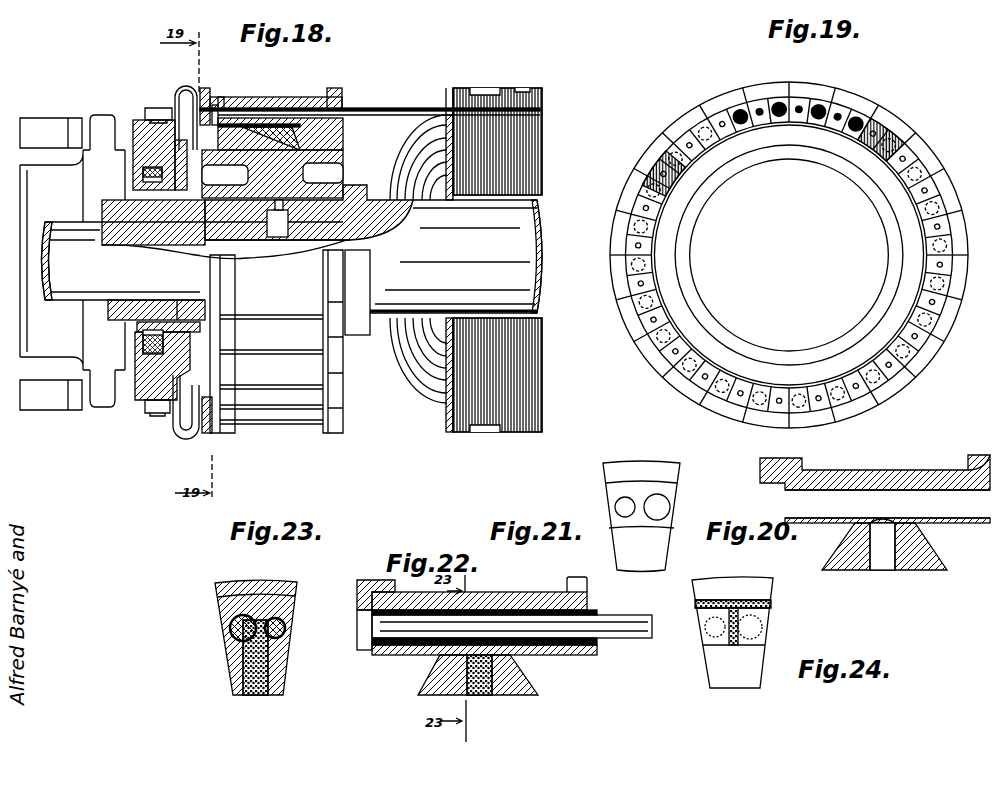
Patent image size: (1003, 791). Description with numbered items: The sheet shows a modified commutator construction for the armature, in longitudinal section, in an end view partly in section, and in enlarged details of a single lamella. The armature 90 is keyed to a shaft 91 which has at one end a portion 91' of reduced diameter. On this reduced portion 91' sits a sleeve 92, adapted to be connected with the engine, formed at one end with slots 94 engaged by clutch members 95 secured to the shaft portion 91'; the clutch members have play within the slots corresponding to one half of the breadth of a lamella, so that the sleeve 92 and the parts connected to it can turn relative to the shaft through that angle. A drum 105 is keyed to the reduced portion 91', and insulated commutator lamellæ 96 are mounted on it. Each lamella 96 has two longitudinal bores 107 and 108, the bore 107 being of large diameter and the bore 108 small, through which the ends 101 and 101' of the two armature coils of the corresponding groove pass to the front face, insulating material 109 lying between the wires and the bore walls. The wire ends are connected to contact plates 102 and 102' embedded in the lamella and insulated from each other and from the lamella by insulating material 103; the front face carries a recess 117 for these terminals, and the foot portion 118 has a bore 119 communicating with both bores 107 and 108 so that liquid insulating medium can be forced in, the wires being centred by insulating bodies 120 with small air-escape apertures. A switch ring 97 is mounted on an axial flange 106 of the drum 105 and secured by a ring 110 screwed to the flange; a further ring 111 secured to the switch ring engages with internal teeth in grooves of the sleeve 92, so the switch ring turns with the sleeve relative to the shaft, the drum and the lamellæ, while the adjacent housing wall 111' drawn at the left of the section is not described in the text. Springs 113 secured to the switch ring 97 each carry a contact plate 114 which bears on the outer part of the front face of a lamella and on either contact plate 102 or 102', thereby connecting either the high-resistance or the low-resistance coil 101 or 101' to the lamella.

In FIG. 18, the armature 90 is at (538, 168).
In FIG. 18, the shaft 91 is at (456, 256).
In FIG. 18, the reduced portion of shaft 91' is at (124, 271).
In FIG. 18, the sleeve 92 is at (138, 246).
In FIG. 18, the slots 94 is at (166, 246).
In FIG. 18, the clutch members 95 is at (312, 242).
In FIG. 18, the commutator lamellæ 96 is at (298, 99).
In FIG. 19, the commutator lamellæ 96 is at (682, 122).
In FIG. 22, the commutator lamellæ 96 is at (498, 595).
In FIG. 20, the commutator lamellæ 96 is at (890, 473).
In FIG. 18, the switch ring 97 is at (135, 142).
In FIG. 18, the armature coil end wire 101 is at (370, 102).
In FIG. 19, the armature coil end wire 101 is at (832, 108).
In FIG. 23, the armature coil end wire 101 is at (221, 628).
In FIG. 22, the armature coil end wire 101 is at (512, 640).
In FIG. 19, the armature coil end wire 101' is at (795, 94).
In FIG. 23, the armature coil end wire 101' is at (297, 624).
In FIG. 18, the contact plate 102 is at (234, 95).
In FIG. 19, the contact plate 102 is at (789, 233).
In FIG. 22, the contact plate 102 is at (364, 615).
In FIG. 24, the contact plate 102 is at (773, 627).
In FIG. 19, the contact plate 102' is at (698, 98).
In FIG. 24, the contact plate 102' is at (696, 637).
In FIG. 18, the insulating material 103 is at (224, 98).
In FIG. 19, the insulating material 103 is at (740, 128).
In FIG. 18, the drum 105 is at (340, 173).
In FIG. 18, the axial flange 106 is at (208, 170).
In FIG. 18, the longitudinal bore 107 is at (345, 124).
In FIG. 19, the longitudinal bore 107 is at (852, 136).
In FIG. 21, the longitudinal bore 107 is at (668, 504).
In FIG. 20, the longitudinal bore 107 is at (887, 506).
In FIG. 24, the longitudinal bore 107 is at (768, 619).
In FIG. 19, the longitudinal bore 108 is at (818, 130).
In FIG. 21, the longitudinal bore 108 is at (615, 508).
In FIG. 24, the longitudinal bore 108 is at (700, 620).
In FIG. 18, the insulating material 109 is at (322, 97).
In FIG. 18, the ring 110 is at (143, 344).
In FIG. 18, the ring 111 is at (141, 272).
In FIG. 18, the housing bracket 111' is at (72, 262).
In FIG. 18, the springs 113 is at (186, 92).
In FIG. 18, the contact plate 114 is at (206, 88).
In FIG. 19, the contact plate 114 is at (650, 162).
In FIG. 20, the recess 117 is at (772, 492).
In FIG. 23, the foot portion 118 is at (285, 682).
In FIG. 22, the foot portion 118 is at (540, 672).
In FIG. 21, the foot portion 118 is at (617, 549).
In FIG. 20, the foot portion 118 is at (838, 546).
In FIG. 24, the foot portion 118 is at (712, 681).
In FIG. 23, the bore 119 is at (262, 697).
In FIG. 22, the bore 119 is at (478, 697).
In FIG. 20, the bore 119 is at (885, 570).
In FIG. 22, the insulating bodies 120 is at (587, 598).